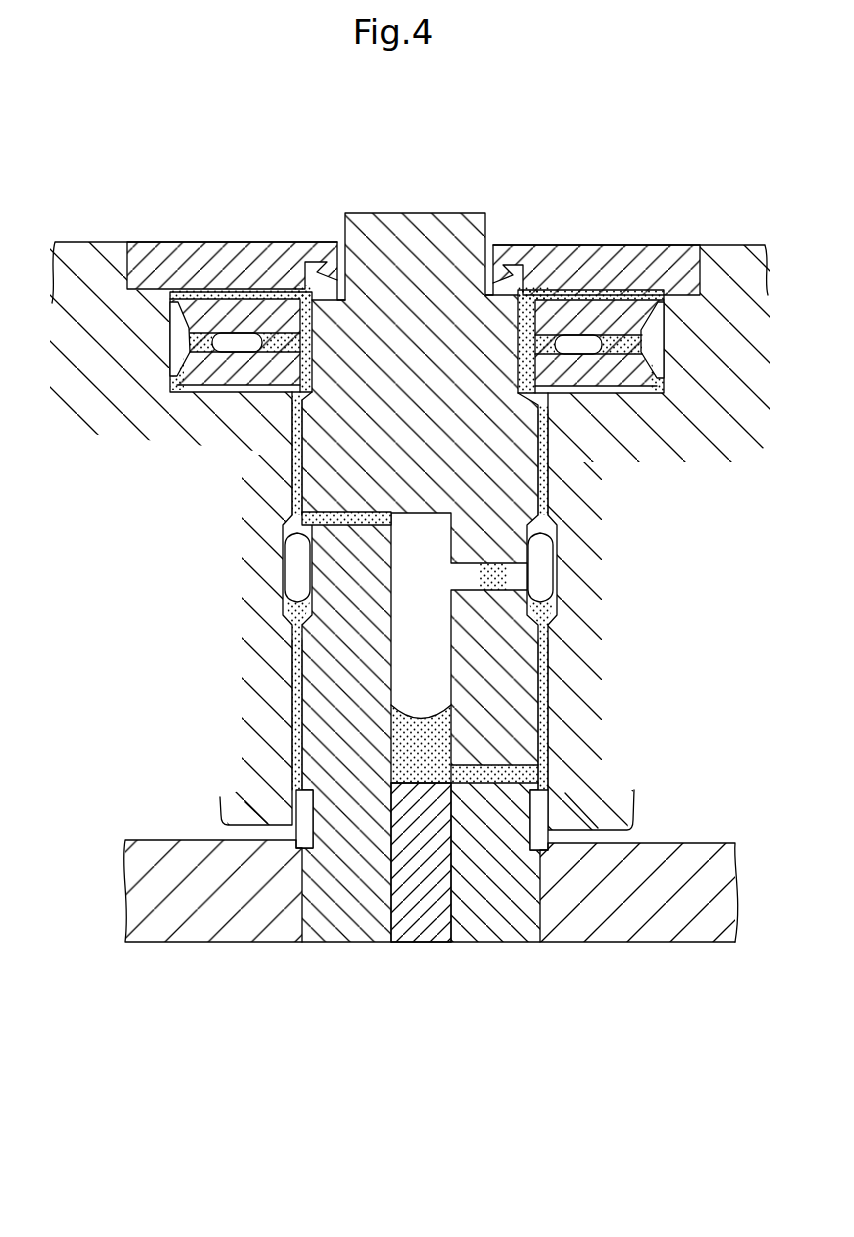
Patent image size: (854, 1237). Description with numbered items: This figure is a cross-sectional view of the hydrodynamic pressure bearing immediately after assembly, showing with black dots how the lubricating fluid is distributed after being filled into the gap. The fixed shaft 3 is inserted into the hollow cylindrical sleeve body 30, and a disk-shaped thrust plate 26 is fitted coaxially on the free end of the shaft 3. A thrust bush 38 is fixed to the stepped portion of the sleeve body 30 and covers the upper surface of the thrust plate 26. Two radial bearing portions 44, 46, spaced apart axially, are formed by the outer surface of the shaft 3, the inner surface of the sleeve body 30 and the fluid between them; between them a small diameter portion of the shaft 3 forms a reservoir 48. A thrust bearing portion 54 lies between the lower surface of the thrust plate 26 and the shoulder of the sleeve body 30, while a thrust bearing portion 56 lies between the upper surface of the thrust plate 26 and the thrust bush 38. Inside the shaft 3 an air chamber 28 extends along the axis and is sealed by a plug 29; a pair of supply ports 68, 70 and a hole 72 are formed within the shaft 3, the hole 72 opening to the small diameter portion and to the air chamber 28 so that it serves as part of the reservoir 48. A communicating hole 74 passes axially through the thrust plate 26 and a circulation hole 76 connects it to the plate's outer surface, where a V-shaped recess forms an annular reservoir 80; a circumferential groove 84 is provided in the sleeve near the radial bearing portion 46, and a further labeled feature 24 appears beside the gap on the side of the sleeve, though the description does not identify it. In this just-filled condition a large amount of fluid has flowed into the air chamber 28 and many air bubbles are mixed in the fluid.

The shaft 3 is at (558, 647).
The clearance 24 is at (542, 462).
The thrust plate 26 is at (205, 312).
The air chamber 28 is at (412, 682).
The plug 29 is at (424, 927).
The sleeve body 30 is at (697, 585).
The thrust bush 38 is at (660, 295).
The radial bearing portion 44 is at (285, 732).
The radial bearing portion 46 is at (285, 493).
The reservoir 48 is at (292, 573).
The thrust bearing portion 54 is at (182, 396).
The thrust bearing portion 56 is at (247, 297).
The supply port 68 is at (503, 775).
The supply port 70 is at (337, 510).
The hole 72 is at (465, 575).
The communicating hole 74 is at (328, 333).
The circulation hole 76 is at (583, 345).
The annular reservoir 80 is at (173, 340).
The circumferential groove 84 is at (550, 422).